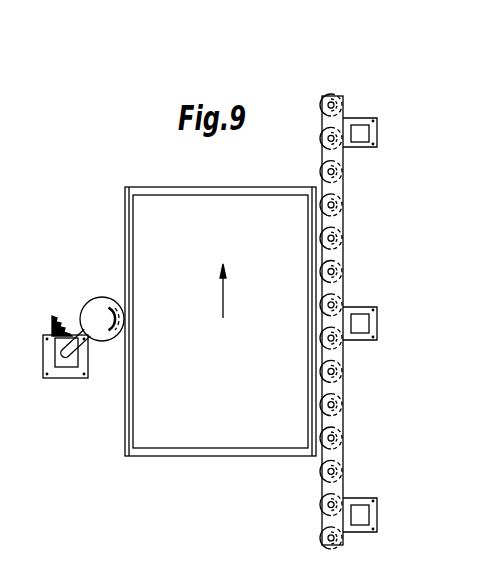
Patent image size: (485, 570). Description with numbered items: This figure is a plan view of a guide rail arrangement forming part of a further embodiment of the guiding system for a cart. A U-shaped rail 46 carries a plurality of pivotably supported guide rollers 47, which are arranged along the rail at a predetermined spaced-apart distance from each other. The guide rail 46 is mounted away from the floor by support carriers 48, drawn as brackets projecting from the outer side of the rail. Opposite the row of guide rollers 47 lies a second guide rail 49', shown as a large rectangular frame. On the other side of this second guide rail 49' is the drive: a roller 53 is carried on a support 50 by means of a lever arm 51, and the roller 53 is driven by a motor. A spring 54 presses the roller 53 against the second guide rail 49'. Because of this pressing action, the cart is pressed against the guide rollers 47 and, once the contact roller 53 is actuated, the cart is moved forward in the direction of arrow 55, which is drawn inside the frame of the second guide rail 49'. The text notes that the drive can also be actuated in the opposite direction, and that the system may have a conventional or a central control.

The U-shaped rail 46 is at (340, 216).
The guide rollers 47 is at (337, 470).
The support carriers 48 is at (377, 133).
The second guide rail 49' is at (202, 321).
The support 50 is at (63, 378).
The lever arm 51 is at (58, 355).
The roller 53 is at (100, 298).
The spring 54 is at (62, 323).
The arrow 55 is at (222, 300).